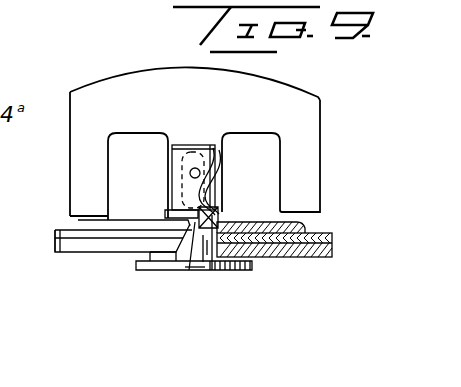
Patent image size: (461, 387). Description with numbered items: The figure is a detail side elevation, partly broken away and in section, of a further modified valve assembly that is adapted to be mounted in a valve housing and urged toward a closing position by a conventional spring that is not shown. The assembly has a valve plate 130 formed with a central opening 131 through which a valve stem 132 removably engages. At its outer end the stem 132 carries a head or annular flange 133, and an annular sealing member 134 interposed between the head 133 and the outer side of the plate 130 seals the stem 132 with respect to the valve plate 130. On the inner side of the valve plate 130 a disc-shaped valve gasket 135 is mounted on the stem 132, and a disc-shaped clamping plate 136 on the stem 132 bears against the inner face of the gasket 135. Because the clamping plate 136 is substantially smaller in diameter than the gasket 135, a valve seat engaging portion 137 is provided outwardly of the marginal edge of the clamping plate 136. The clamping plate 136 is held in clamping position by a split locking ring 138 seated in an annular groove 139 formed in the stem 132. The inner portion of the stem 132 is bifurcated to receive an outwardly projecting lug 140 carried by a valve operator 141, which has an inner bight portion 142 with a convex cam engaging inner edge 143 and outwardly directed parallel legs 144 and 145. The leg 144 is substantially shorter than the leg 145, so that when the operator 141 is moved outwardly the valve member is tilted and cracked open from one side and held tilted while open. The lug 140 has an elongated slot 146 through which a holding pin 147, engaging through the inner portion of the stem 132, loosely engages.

The valve plate 130 is at (98, 248).
The central opening 131 is at (200, 272).
The valve stem 132 is at (175, 263).
The head or annular flange 133 is at (228, 272).
The annular sealing member 134 is at (213, 272).
The disc-shaped valve gasket 135 is at (56, 233).
The disc-shaped clamping plate 136 is at (248, 220).
The valve seat engaging portion 137 is at (67, 221).
The split locking ring 138 is at (170, 216).
The annular groove 139 is at (198, 237).
The outwardly projecting lug 140 is at (224, 157).
The valve operator 141 is at (149, 85).
The inner bight portion 142 is at (107, 100).
The convex cam engaging inner edge 143 is at (280, 77).
The leg 144 is at (313, 148).
The leg 145 is at (70, 157).
The elongated slot 146 is at (200, 141).
The holding pin 147 is at (190, 172).